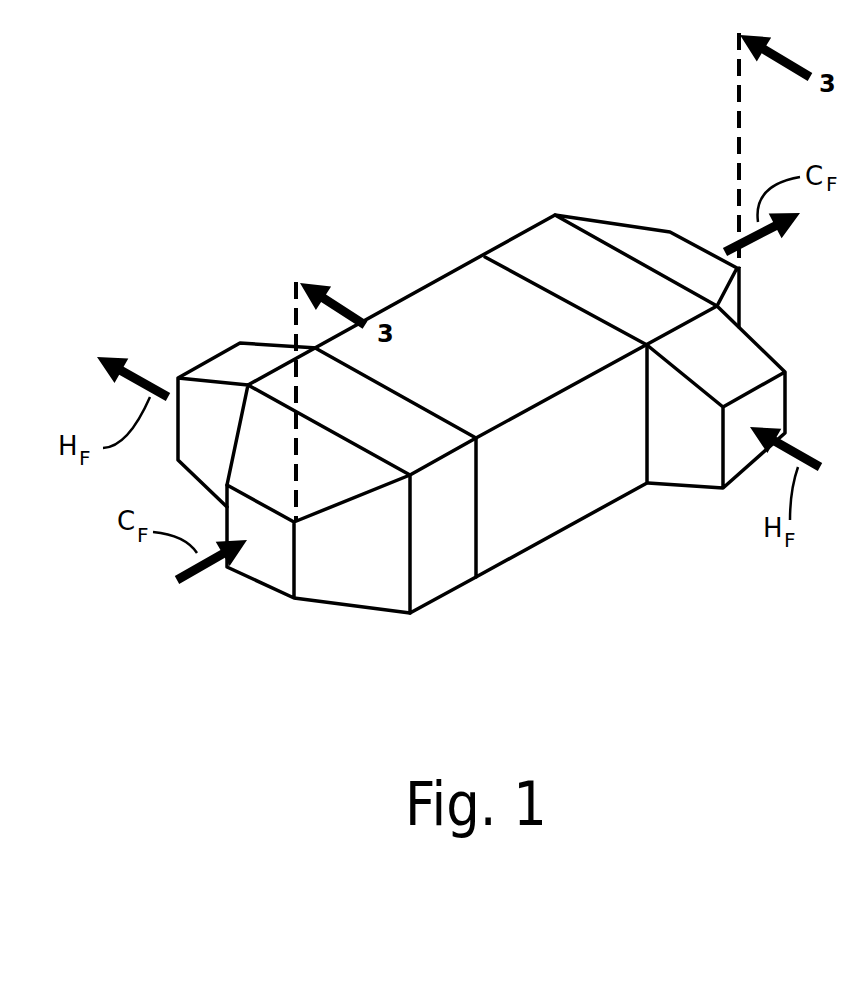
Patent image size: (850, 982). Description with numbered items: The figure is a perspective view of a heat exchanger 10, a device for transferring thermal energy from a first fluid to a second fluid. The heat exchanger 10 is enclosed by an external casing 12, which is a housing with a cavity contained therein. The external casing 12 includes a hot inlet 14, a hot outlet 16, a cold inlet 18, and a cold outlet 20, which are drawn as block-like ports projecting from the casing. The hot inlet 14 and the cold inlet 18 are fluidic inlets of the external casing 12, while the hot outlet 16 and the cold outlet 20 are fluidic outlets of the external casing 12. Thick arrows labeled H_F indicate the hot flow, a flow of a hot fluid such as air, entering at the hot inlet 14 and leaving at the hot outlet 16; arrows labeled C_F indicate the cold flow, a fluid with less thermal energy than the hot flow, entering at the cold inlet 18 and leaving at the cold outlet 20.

The heat exchanger 10 is at (292, 140).
The external casing 12 is at (545, 248).
The hot inlet 14 is at (765, 345).
The hot outlet 16 is at (208, 360).
The cold inlet 18 is at (345, 587).
The cold outlet 20 is at (672, 260).